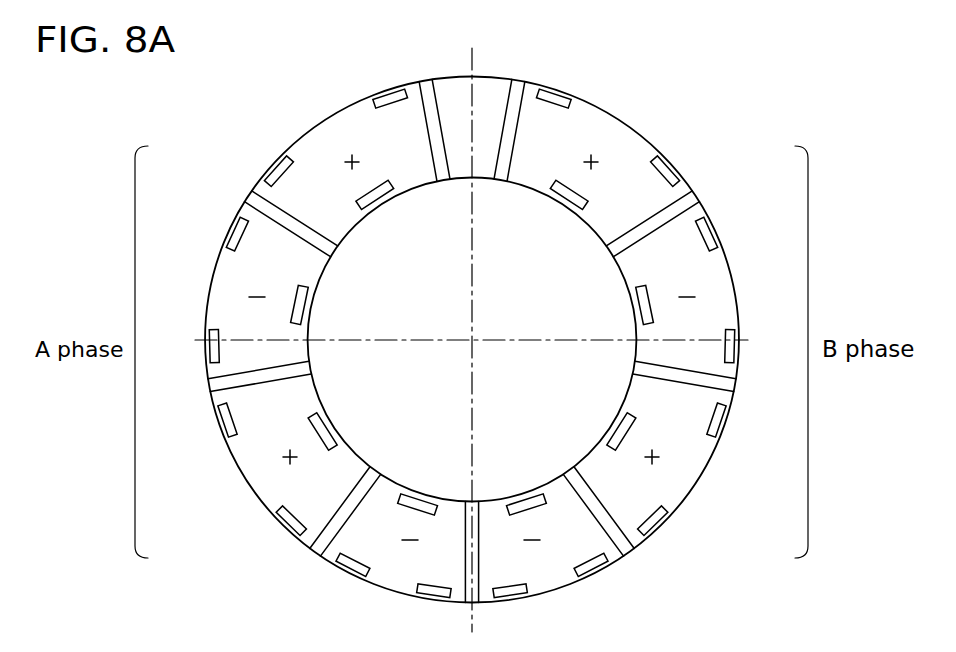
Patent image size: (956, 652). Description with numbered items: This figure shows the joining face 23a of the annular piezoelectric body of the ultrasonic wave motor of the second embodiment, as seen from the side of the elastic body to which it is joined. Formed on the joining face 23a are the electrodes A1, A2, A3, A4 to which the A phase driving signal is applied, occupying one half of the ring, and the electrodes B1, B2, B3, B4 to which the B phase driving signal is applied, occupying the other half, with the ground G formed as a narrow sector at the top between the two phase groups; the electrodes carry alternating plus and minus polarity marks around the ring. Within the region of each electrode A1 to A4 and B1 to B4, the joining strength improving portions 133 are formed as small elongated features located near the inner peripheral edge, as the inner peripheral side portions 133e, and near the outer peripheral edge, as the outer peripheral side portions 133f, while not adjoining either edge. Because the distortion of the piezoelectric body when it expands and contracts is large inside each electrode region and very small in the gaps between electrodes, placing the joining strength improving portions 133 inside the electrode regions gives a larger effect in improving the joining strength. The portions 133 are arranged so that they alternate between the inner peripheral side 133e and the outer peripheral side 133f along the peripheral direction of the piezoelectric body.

The joining face 23a is at (680, 91).
The joining strength improving portions 133 is at (340, 36).
The inner peripheral side joining strength improving portion 133e is at (363, 198).
The outer peripheral side joining strength improving portion 133f is at (378, 96).
The ground G is at (495, 84).
The electrode A1 is at (292, 196).
The electrode A2 is at (242, 262).
The electrode A3 is at (245, 450).
The electrode A4 is at (332, 557).
The electrode B1 is at (640, 143).
The electrode B2 is at (718, 270).
The electrode B3 is at (693, 462).
The electrode B4 is at (607, 557).